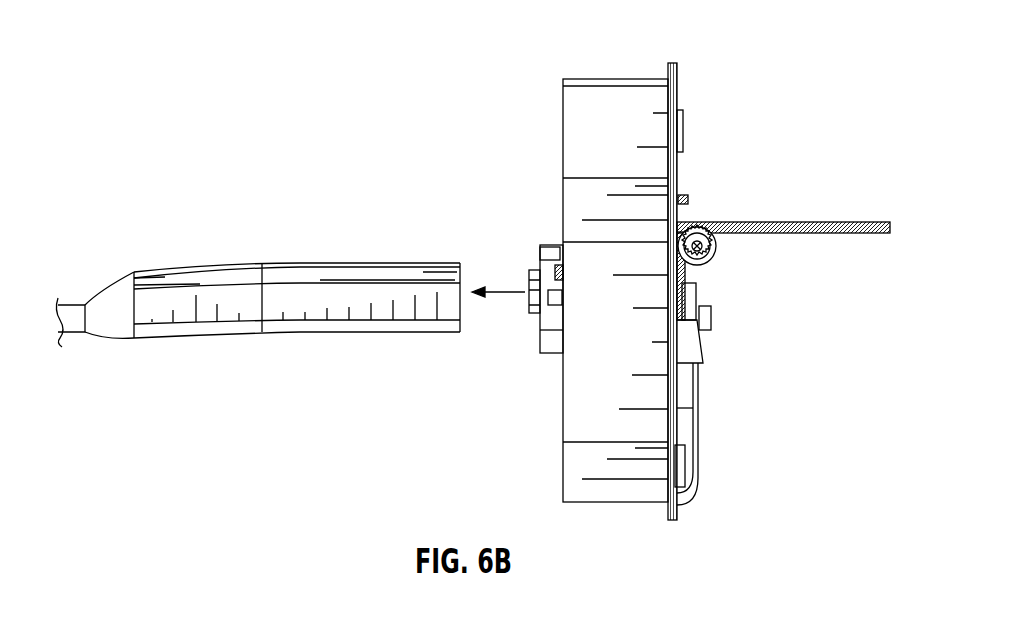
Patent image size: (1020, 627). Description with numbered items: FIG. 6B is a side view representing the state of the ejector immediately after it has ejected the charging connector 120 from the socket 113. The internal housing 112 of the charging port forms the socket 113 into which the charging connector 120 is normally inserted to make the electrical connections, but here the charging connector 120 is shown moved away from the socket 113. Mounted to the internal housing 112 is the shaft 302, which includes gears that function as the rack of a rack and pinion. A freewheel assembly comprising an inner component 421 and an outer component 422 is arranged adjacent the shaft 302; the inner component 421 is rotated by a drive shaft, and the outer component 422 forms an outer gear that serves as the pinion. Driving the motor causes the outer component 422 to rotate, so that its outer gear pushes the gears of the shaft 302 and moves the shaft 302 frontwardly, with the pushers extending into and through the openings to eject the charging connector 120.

The internal housing 112 is at (582, 138).
The socket 113 is at (548, 246).
The charging connector 120 is at (205, 248).
The outer component 422 is at (698, 226).
The inner component 421 is at (712, 230).
The shaft 302 is at (700, 286).